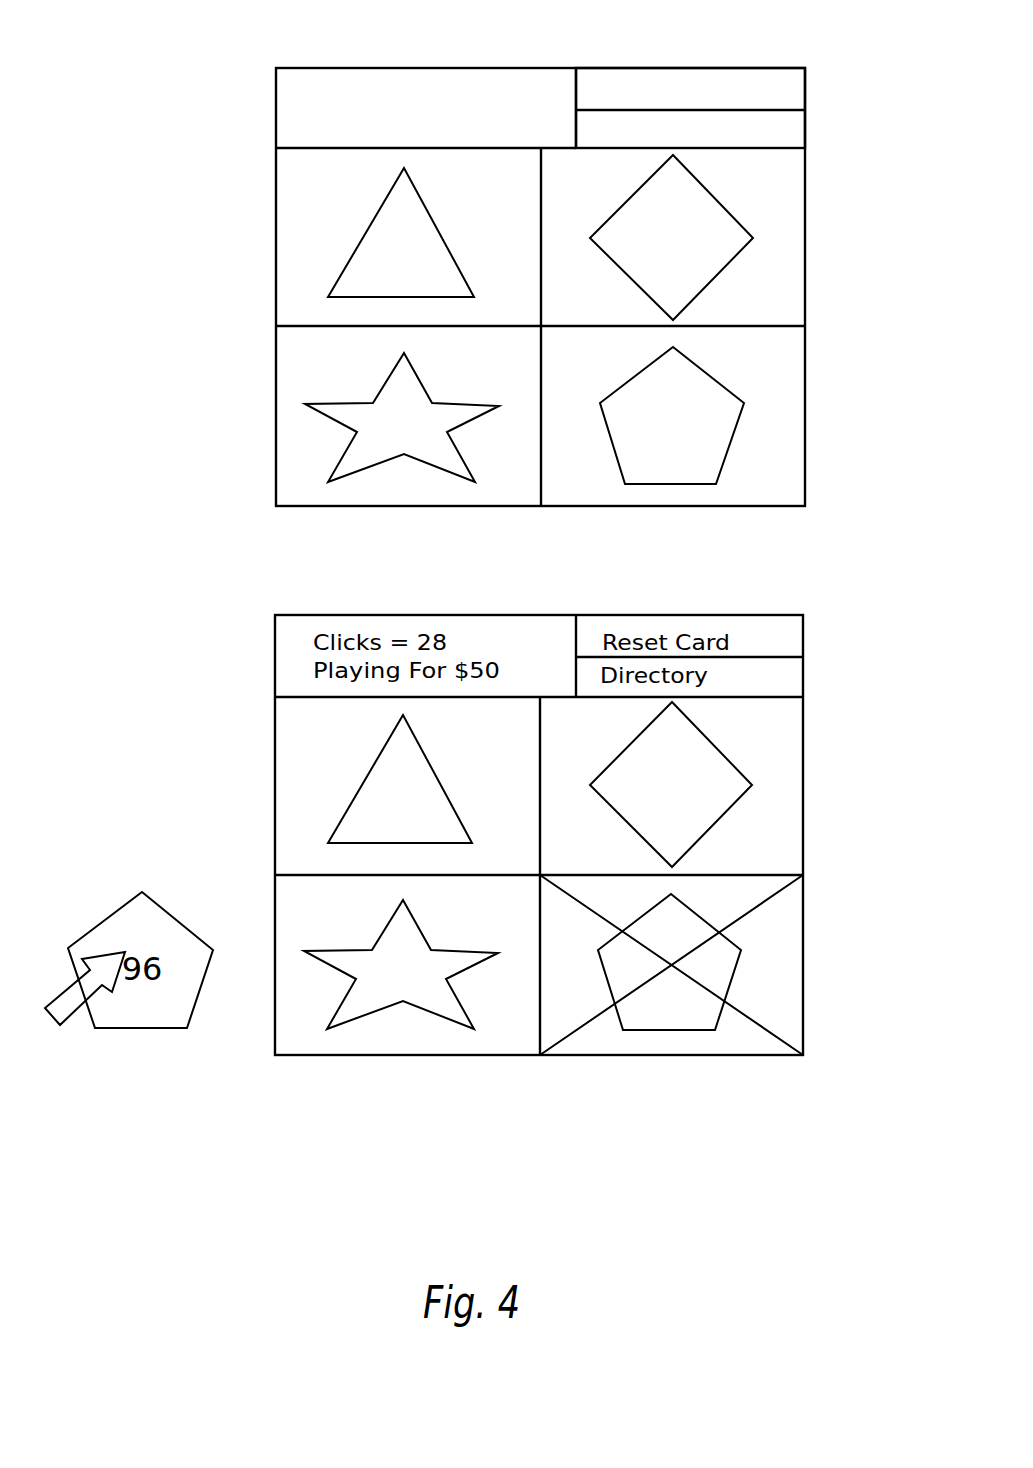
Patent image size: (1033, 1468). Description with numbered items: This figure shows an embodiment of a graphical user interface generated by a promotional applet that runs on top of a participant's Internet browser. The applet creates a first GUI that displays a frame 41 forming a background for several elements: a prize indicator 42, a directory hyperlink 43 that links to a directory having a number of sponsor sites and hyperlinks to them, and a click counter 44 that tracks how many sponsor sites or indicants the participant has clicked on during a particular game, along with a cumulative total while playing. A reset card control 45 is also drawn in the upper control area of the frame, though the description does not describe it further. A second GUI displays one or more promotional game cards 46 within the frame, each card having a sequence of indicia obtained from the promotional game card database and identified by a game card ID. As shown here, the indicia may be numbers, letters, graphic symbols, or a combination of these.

The frame 41 is at (525, 92).
The prize indicator 42 is at (305, 115).
The directory hyperlink 43 is at (758, 133).
The click counter 44 is at (320, 82).
The reset card button 45 is at (718, 82).
The promotional game cards 46 is at (805, 362).